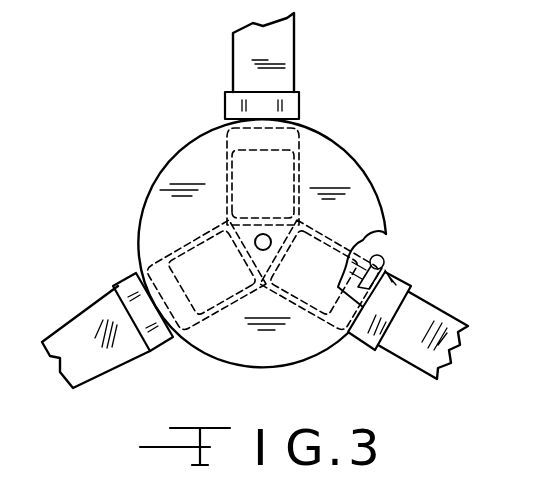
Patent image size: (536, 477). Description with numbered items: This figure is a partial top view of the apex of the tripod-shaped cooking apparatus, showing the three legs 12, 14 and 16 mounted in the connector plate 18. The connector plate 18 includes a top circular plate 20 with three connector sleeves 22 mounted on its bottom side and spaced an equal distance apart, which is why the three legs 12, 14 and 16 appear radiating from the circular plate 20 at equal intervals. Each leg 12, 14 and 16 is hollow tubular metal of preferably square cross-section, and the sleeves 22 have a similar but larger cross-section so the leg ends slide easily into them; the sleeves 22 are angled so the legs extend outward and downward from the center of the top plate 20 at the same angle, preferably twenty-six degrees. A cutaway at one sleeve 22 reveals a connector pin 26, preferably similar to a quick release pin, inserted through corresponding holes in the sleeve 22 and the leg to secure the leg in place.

The leg 12 is at (79, 330).
The leg 14 is at (296, 58).
The leg 16 is at (443, 304).
The connector plate 18 is at (325, 156).
The top circular plate 20 is at (373, 166).
The connector sleeve 22 is at (167, 343).
The connector pin 26 is at (394, 256).